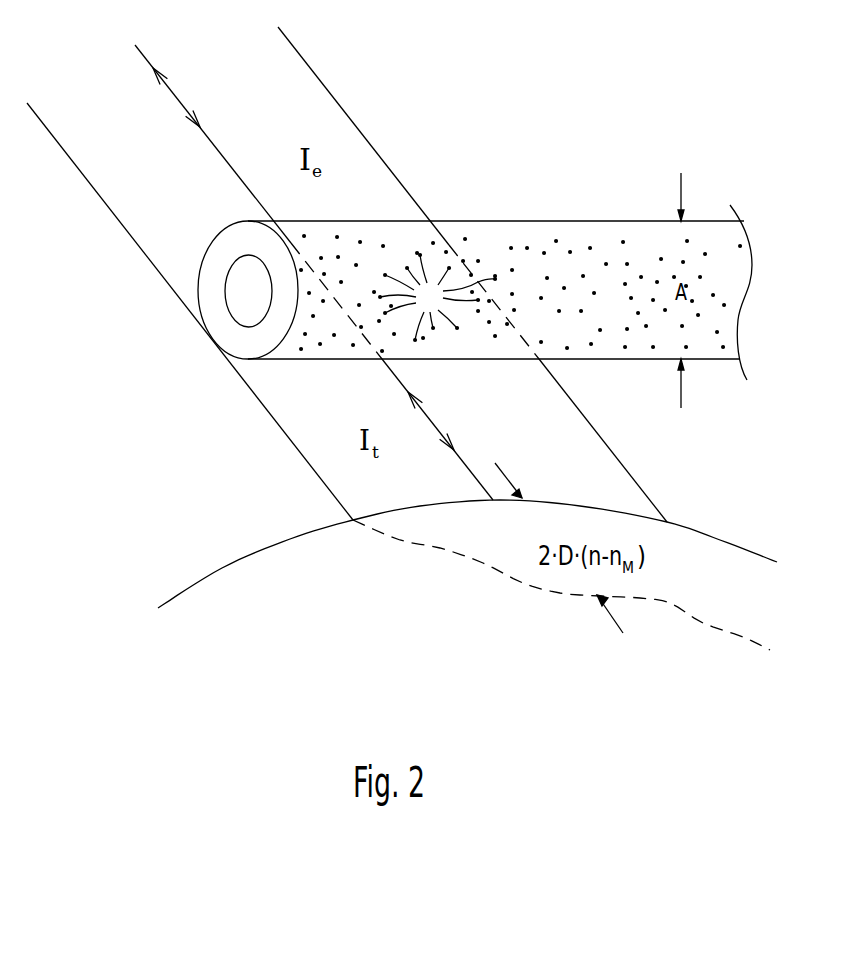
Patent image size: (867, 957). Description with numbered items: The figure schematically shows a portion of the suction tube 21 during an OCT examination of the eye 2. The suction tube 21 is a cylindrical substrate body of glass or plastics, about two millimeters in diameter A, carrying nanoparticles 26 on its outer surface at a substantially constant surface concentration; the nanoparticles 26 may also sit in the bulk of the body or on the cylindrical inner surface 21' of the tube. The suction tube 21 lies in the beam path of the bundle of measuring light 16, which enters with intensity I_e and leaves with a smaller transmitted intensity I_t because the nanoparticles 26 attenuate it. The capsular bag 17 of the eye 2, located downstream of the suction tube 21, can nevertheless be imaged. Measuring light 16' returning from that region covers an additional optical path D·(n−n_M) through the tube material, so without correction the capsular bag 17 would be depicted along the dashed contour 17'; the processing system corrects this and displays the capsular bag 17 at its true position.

The eye 2 is at (229, 517).
The bundle of measuring light 16 is at (325, 272).
The OCT measuring light emanating from the examination area 16' is at (313, 228).
The capsular bag 17 is at (467, 528).
The dashed line (erroneous contour of capsular bag) 17' is at (561, 599).
The suction tube 21 is at (500, 268).
The cylindrical inner surface of the suction tube 21' is at (233, 300).
The nanoparticles 26 is at (437, 297).